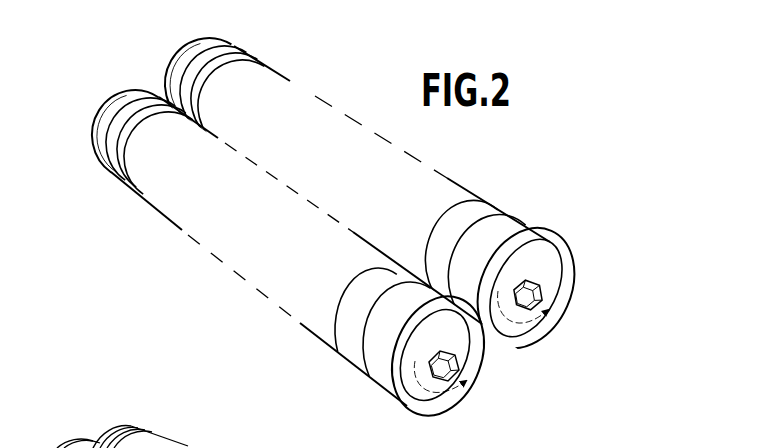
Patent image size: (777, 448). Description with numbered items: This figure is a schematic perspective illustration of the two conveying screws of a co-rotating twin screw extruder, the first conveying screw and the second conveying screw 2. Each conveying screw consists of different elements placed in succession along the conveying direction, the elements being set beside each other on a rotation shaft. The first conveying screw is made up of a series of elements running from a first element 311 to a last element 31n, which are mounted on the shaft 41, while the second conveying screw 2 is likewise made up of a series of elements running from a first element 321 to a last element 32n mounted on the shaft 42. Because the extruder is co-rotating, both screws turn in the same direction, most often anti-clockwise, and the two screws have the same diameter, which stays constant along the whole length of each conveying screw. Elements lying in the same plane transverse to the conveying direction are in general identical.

The conveying screw 2 is at (591, 260).
The element 31n is at (104, 150).
The element 311 is at (364, 375).
The element 32n is at (218, 51).
The element 321 is at (503, 231).
The shaft 41 is at (448, 352).
The shaft 42 is at (532, 287).